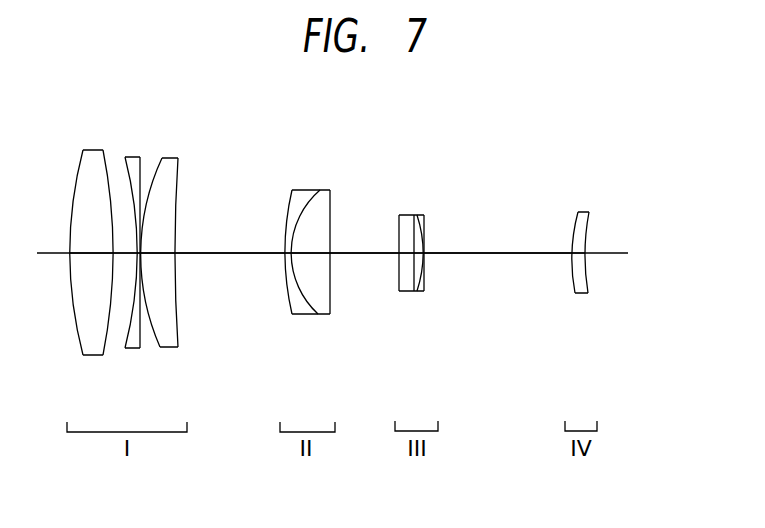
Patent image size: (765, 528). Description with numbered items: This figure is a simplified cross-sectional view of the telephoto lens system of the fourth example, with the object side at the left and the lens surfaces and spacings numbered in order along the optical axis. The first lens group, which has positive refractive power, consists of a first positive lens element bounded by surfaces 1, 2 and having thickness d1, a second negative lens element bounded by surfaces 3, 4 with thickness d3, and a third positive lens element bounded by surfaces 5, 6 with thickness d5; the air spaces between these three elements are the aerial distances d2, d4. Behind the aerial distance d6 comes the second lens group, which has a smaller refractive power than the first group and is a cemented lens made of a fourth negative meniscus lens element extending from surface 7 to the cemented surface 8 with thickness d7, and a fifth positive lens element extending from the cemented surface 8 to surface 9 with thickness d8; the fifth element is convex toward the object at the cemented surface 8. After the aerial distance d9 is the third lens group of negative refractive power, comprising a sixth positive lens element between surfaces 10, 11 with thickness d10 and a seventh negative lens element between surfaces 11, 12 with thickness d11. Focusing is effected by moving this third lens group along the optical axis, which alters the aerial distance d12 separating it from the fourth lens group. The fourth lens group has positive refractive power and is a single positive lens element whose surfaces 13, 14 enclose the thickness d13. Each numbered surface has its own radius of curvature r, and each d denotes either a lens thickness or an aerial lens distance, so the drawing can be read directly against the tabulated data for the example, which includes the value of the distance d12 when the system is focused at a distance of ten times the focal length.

The first lens surface 1 is at (82, 161).
The second lens surface 2 is at (106, 163).
The third lens surface 3 is at (123, 168).
The fourth lens surface 4 is at (145, 163).
The fifth lens surface 5 is at (162, 170).
The sixth lens surface 6 is at (182, 170).
The seventh lens surface 7 is at (292, 203).
The cemented surface 8 is at (308, 200).
The ninth lens surface 9 is at (332, 199).
The tenth lens surface 10 is at (399, 230).
The eleventh lens surface 11 is at (410, 218).
The twelfth lens surface 12 is at (425, 228).
The thirteenth lens surface 13 is at (575, 228).
The fourteenth lens surface 14 is at (588, 225).
The lens thickness d1 is at (84, 254).
The aerial lens distance d2 is at (124, 255).
The lens thickness d3 is at (139, 257).
The aerial lens distance d4 is at (148, 263).
The lens thickness d5 is at (143, 267).
The aerial lens distance d6 is at (232, 254).
The lens thickness d7 is at (287, 278).
The lens thickness d8 is at (318, 254).
The aerial lens distance d9 is at (367, 254).
The lens thickness d10 is at (403, 256).
The lens thickness d11 is at (417, 260).
The aerial lens distance d12 is at (503, 254).
The lens thickness d13 is at (578, 256).